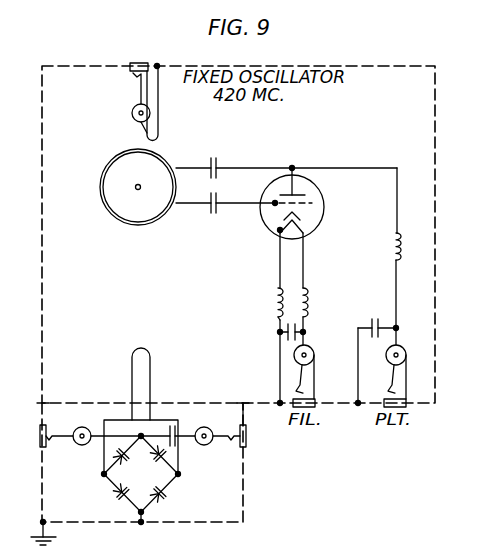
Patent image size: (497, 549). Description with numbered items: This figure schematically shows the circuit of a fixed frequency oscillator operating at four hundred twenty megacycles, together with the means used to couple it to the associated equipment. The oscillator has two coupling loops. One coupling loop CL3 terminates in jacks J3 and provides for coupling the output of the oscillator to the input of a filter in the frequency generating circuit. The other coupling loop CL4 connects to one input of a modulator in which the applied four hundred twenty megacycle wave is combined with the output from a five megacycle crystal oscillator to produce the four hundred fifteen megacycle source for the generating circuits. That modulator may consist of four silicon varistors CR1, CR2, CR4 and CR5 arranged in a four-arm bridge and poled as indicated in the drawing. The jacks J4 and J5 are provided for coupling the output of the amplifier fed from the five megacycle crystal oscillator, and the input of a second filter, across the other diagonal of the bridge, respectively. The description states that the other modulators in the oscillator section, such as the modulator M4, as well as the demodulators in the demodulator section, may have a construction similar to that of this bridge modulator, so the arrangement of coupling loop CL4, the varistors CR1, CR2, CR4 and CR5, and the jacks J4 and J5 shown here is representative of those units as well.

The jacks J3 is at (128, 78).
The coupling loop CL3 is at (140, 131).
The coupling loop CL4 is at (132, 362).
The jack J4 is at (90, 427).
The jack J5 is at (212, 425).
The silicon varistor CR1 is at (113, 456).
The silicon varistor CR2 is at (168, 452).
The silicon varistor CR4 is at (113, 494).
The crystal rectifier CR5 is at (168, 493).
The modulator M4 is at (141, 474).